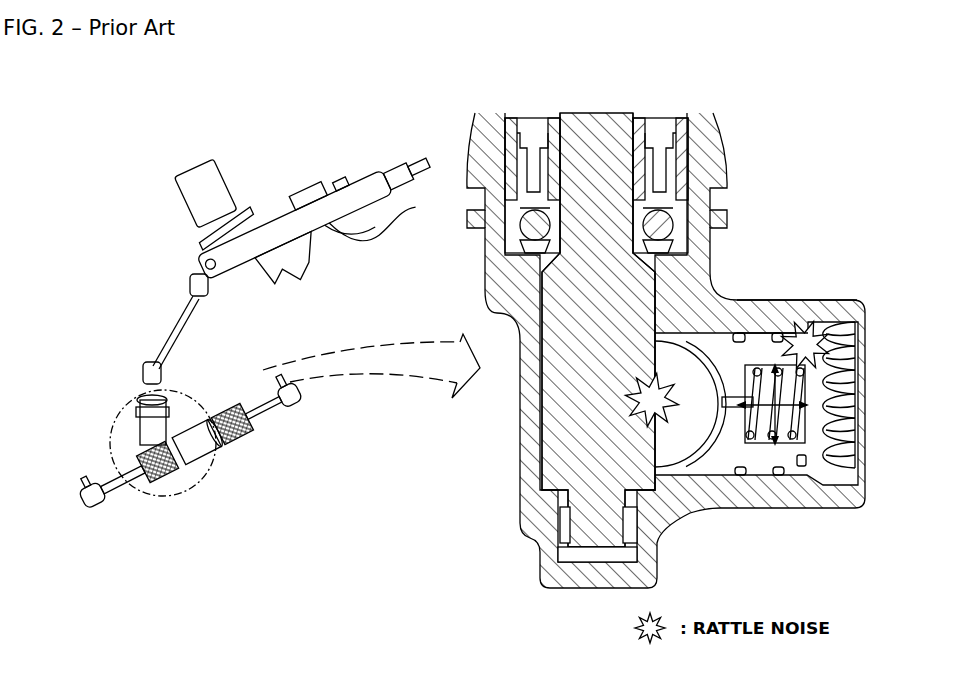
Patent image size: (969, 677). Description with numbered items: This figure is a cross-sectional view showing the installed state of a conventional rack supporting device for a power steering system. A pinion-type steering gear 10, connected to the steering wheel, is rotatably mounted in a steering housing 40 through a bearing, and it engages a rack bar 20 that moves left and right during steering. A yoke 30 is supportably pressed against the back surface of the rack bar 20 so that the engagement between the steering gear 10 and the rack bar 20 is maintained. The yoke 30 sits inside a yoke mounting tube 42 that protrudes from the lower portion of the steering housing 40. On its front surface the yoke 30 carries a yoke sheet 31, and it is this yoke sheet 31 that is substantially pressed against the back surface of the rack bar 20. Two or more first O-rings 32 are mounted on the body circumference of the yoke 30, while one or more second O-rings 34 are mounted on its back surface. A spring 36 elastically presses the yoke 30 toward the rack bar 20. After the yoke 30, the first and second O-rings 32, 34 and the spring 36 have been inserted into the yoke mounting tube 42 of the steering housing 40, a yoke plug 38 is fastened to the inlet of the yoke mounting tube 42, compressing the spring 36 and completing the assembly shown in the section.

The steering gear 10 is at (560, 452).
The rack bar 20 is at (697, 483).
The yoke 30 is at (747, 459).
The yoke sheet 31 is at (742, 475).
The first O-rings 32 is at (777, 477).
The second O-rings 34 is at (800, 467).
The spring 36 is at (793, 333).
The yoke plug 38 is at (848, 335).
The steering housing 40 is at (714, 250).
The yoke mounting tube 42 is at (770, 312).